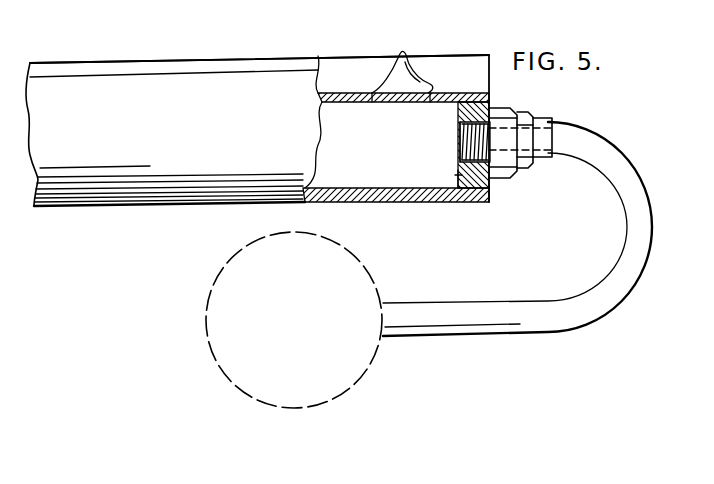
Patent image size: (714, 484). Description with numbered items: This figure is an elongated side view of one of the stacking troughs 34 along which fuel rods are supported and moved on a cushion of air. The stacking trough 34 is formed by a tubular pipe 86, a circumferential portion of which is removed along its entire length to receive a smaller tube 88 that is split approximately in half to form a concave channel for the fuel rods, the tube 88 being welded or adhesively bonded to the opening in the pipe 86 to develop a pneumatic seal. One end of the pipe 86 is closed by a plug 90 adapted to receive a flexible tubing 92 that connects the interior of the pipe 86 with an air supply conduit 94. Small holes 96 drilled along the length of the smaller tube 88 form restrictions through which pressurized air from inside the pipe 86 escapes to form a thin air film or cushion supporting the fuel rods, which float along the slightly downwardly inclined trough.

The stacking trough 34 is at (309, 54).
The tubular pipe 86 is at (243, 136).
The smaller tube 88 is at (231, 60).
The plug 90 is at (457, 176).
The flexible tubing 92 is at (595, 145).
The air supply conduit 94 is at (220, 296).
The small holes 96 is at (402, 56).